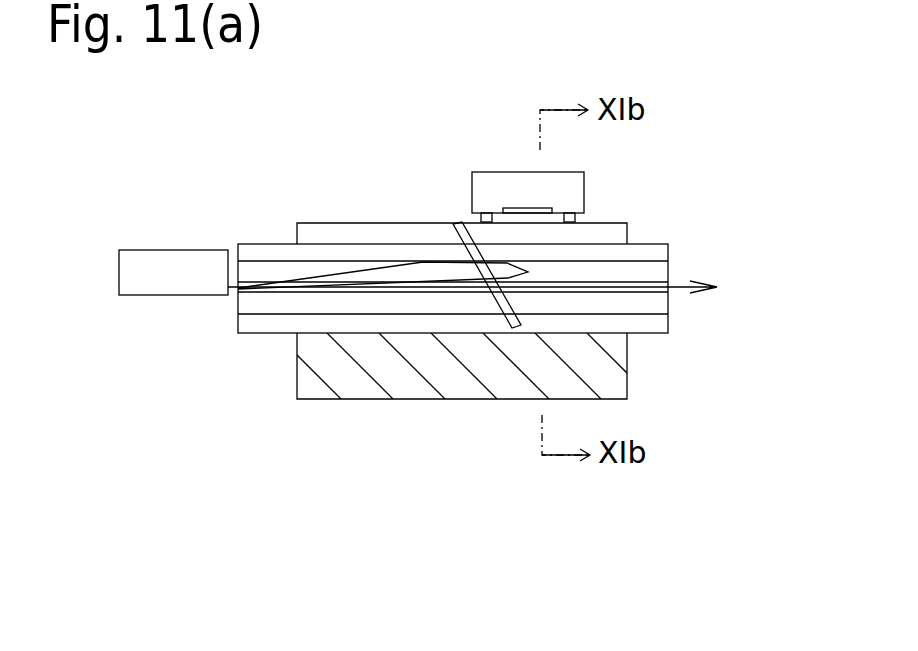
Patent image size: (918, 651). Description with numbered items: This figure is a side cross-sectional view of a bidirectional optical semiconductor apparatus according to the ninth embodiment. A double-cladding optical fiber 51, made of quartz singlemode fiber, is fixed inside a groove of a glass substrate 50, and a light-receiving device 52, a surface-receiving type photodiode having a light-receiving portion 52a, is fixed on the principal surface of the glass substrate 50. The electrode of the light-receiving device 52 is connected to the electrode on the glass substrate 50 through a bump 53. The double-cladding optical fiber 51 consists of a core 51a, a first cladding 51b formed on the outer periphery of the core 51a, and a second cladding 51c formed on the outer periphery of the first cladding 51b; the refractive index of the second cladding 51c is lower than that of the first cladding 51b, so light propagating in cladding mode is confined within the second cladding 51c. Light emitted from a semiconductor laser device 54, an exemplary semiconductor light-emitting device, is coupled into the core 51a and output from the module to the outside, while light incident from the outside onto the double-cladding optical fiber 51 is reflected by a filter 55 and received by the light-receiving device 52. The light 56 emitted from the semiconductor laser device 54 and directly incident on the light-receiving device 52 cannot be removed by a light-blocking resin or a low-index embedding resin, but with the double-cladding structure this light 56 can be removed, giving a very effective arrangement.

The glass substrate 50 is at (628, 360).
The double-cladding optical fiber 51 is at (544, 255).
The core 51a is at (668, 283).
The first cladding 51b is at (668, 268).
The second cladding 51c is at (668, 247).
The light-receiving device 52 is at (584, 186).
The light-receiving portion 52a is at (515, 208).
The bump 53 is at (575, 218).
The semiconductor laser device 54 is at (176, 250).
The filter 55 is at (497, 300).
The light 56 is at (380, 266).